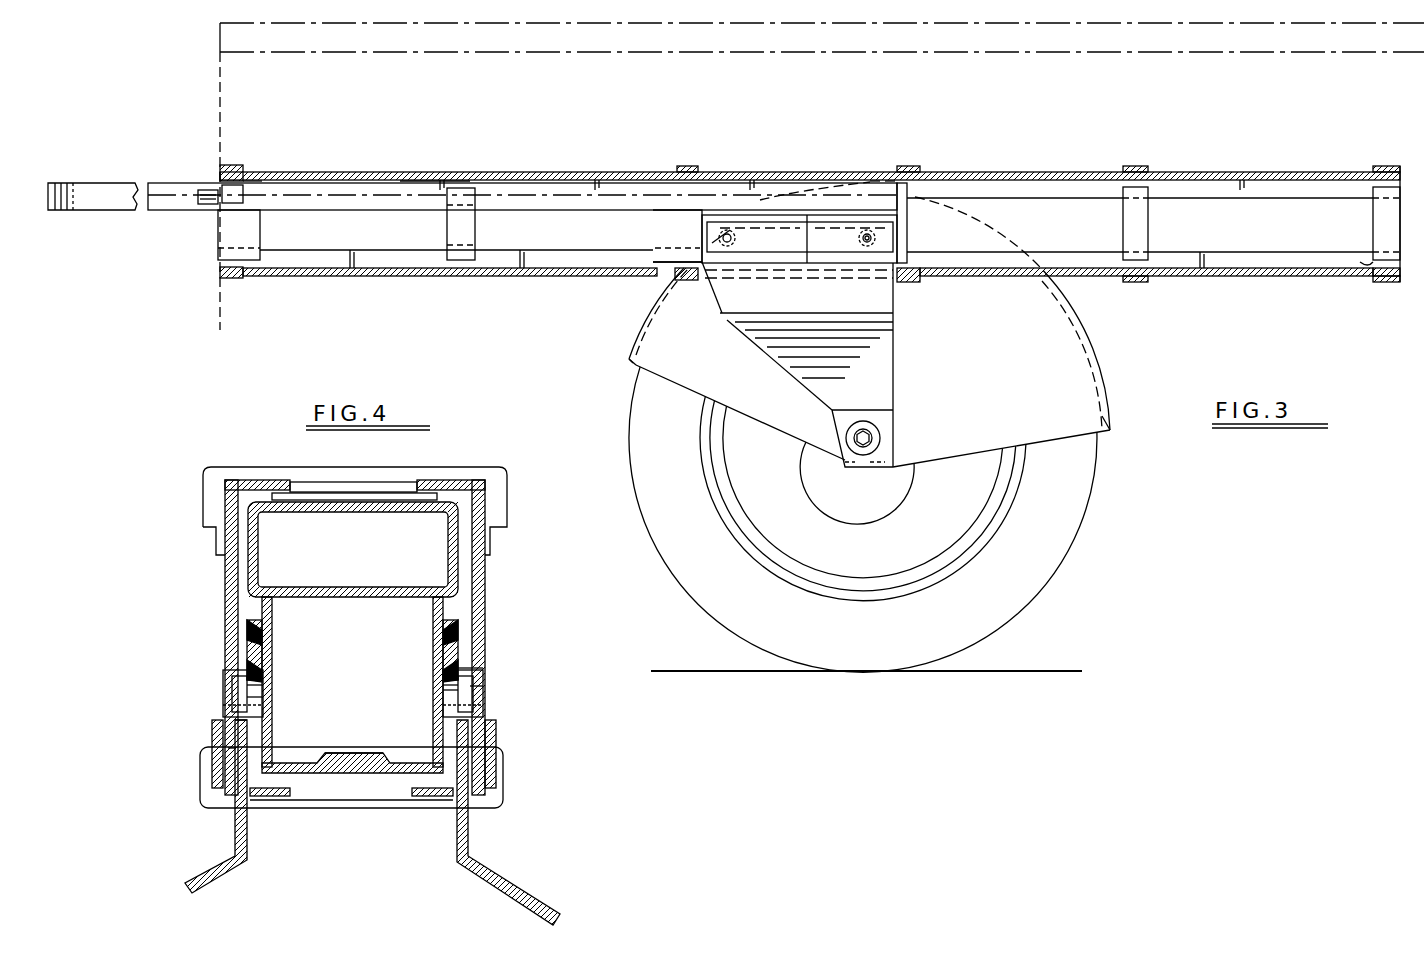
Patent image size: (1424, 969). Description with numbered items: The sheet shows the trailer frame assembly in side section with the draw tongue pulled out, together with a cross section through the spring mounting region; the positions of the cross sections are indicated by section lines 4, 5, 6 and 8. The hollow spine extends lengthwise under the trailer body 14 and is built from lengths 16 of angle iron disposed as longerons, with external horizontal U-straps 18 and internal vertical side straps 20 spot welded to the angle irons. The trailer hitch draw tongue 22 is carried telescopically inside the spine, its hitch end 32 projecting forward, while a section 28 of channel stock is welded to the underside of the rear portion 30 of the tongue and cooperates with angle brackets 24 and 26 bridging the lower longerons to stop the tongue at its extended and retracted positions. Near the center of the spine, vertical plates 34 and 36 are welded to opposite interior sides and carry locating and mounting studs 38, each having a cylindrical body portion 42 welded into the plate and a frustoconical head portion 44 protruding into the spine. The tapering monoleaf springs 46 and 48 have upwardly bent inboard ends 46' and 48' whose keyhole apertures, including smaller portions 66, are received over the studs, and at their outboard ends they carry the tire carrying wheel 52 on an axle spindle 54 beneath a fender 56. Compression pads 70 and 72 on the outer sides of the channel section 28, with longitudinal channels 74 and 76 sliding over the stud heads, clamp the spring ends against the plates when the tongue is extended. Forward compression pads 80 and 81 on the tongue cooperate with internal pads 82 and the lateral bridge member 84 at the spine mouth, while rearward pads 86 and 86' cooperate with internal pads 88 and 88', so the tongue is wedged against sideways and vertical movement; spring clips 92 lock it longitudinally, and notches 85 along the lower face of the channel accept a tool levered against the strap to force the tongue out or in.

In FIG. 3, the trailer body 14 is at (216, 38).
In FIG. 3, the angle iron lengths 16 is at (1290, 162).
In FIG. 4, the angle iron lengths 16 is at (228, 480).
In FIG. 3, the upper horizontal U-strap 18 is at (233, 279).
In FIG. 4, the upper horizontal U-strap 18 is at (457, 468).
In FIG. 3, the vertical side strap 20 is at (447, 232).
In FIG. 3, the trailer hitch draw tongue 22 is at (438, 179).
In FIG. 4, the trailer hitch draw tongue 22 is at (353, 557).
In FIG. 3, the angle bracket 24 is at (662, 266).
In FIG. 3, the angle bracket 26 is at (1380, 268).
In FIG. 3, the section of tube or channel stock 28 is at (665, 224).
In FIG. 4, the section of tube or channel stock 28 is at (298, 762).
In FIG. 3, the rear portion of tongue 30 is at (345, 183).
In FIG. 3, the hitch end of draw tongue 32 is at (62, 181).
In FIG. 4, the vertical plate 34 is at (226, 628).
In FIG. 4, the vertical plate 36 is at (486, 597).
In FIG. 4, the locating and mounting stud 38 is at (218, 695).
In FIG. 4, the cylindrical body portion 42 is at (230, 700).
In FIG. 4, the frustoconical head portion 44 is at (250, 681).
In FIG. 4, the tapering monoleaf spring 46 is at (527, 822).
In FIG. 4, the inboard end of spring 46' is at (515, 661).
In FIG. 3, the tapering monoleaf spring 48 is at (830, 364).
In FIG. 4, the tapering monoleaf spring 48 is at (236, 809).
In FIG. 4, the inboard end of spring 48' is at (186, 767).
In FIG. 3, the tire carrying wheel 52 is at (1085, 540).
In FIG. 3, the axle spindle 54 is at (880, 441).
In FIG. 3, the fender 56 is at (1122, 397).
In FIG. 4, the smaller aperture portion 66 is at (480, 683).
In FIG. 4, the compression pad 70 is at (256, 648).
In FIG. 3, the compression pad 72 is at (902, 230).
In FIG. 4, the compression pad 72 is at (452, 650).
In FIG. 4, the longitudinally extending channel 74 is at (255, 697).
In FIG. 3, the longitudinally extending channel 76 is at (905, 250).
In FIG. 4, the longitudinally extending channel 76 is at (450, 690).
In FIG. 3, the forward compression pad 80 is at (233, 165).
In FIG. 3, the forward compression pad 81 is at (232, 205).
In FIG. 3, the internally disposed pad 82 is at (247, 182).
In FIG. 3, the lateral bridge member 84 is at (256, 222).
In FIG. 4, the notches or indentations 85 is at (340, 766).
In FIG. 3, the rearward pad member 86 is at (895, 133).
In FIG. 4, the rearward pad member 86 is at (353, 512).
In FIG. 3, the rearward pad member 86' is at (593, 357).
In FIG. 3, the internal spine pad 88 is at (928, 146).
In FIG. 4, the internal spine pad 88 is at (353, 460).
In FIG. 3, the internal spine pad 88' is at (799, 289).
In FIG. 3, the spring clip 92 is at (200, 201).
In FIG. 3, the section line 4— 4 is at (728, 158).
In FIG. 3, the section line 5— 5 is at (653, 310).
In FIG. 3, the section line 6— 6 is at (220, 140).
In FIG. 3, the section line 8— 8 is at (190, 152).